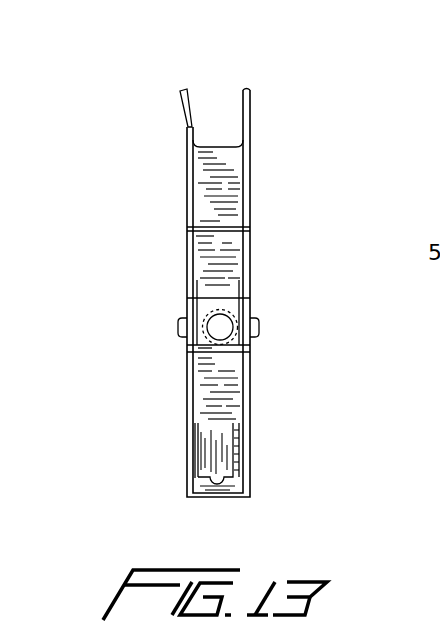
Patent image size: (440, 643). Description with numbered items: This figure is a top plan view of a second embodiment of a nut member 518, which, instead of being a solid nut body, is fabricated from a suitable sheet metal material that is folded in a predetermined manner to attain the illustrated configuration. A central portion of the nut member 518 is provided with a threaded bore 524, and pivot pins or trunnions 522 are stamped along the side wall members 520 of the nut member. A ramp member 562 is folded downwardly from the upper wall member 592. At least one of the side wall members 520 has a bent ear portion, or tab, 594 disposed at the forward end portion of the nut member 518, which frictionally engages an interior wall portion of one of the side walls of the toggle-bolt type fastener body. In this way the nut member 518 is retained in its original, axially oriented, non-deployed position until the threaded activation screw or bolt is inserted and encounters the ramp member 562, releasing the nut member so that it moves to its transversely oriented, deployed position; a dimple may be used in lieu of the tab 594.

The bent ear portion or tab 594 is at (193, 104).
The threaded bore 524 is at (218, 322).
The pivot pins or trunnions 522 is at (180, 332).
The upper wall member 592 is at (232, 383).
The side wall members 520 is at (250, 397).
The nut member 518 is at (187, 388).
The ramp member 562 is at (213, 458).